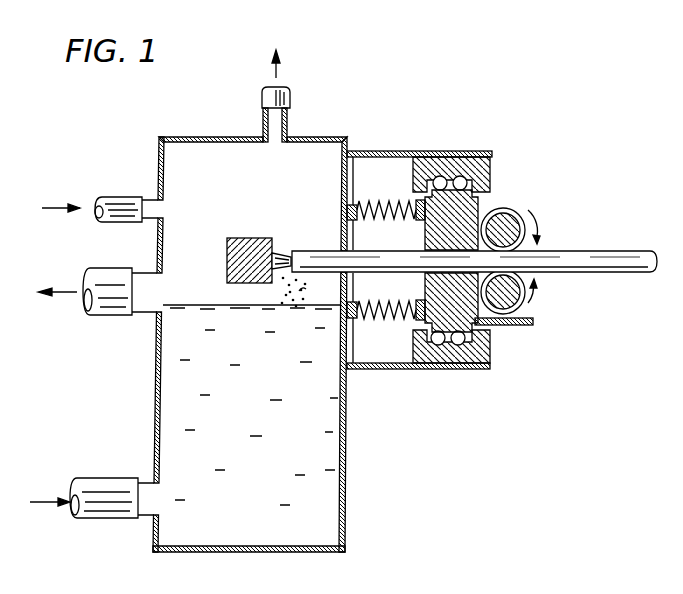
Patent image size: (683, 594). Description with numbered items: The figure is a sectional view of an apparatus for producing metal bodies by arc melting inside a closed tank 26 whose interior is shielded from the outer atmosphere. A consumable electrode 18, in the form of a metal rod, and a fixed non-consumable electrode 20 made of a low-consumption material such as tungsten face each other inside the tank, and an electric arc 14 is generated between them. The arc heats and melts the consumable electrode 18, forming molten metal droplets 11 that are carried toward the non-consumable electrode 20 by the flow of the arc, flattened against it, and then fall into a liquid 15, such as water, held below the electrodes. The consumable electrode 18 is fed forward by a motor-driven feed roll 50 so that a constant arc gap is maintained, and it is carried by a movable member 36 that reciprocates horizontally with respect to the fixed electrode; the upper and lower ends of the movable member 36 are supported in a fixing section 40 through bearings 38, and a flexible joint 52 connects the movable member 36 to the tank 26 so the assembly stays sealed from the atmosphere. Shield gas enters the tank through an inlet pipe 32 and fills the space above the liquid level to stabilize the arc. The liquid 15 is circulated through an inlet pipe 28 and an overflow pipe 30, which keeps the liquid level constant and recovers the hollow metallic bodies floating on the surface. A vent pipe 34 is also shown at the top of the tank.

The molten metal droplets 11 is at (306, 292).
The electric arc 14 is at (286, 255).
The liquid 15 is at (322, 457).
The consumable electrode 18 is at (638, 262).
The non-consumable electrode 20 is at (257, 238).
The closed tank 26 is at (345, 497).
The inlet pipe 28 is at (115, 505).
The overflow pipe 30 is at (108, 305).
The inlet pipe 32 is at (113, 210).
The vent pipe 34 is at (263, 98).
The movable member 36 is at (478, 207).
The bearings 38 is at (467, 186).
The fixing section 40 is at (490, 164).
The feed roll 50 is at (524, 214).
The flexible joint 52 is at (387, 205).